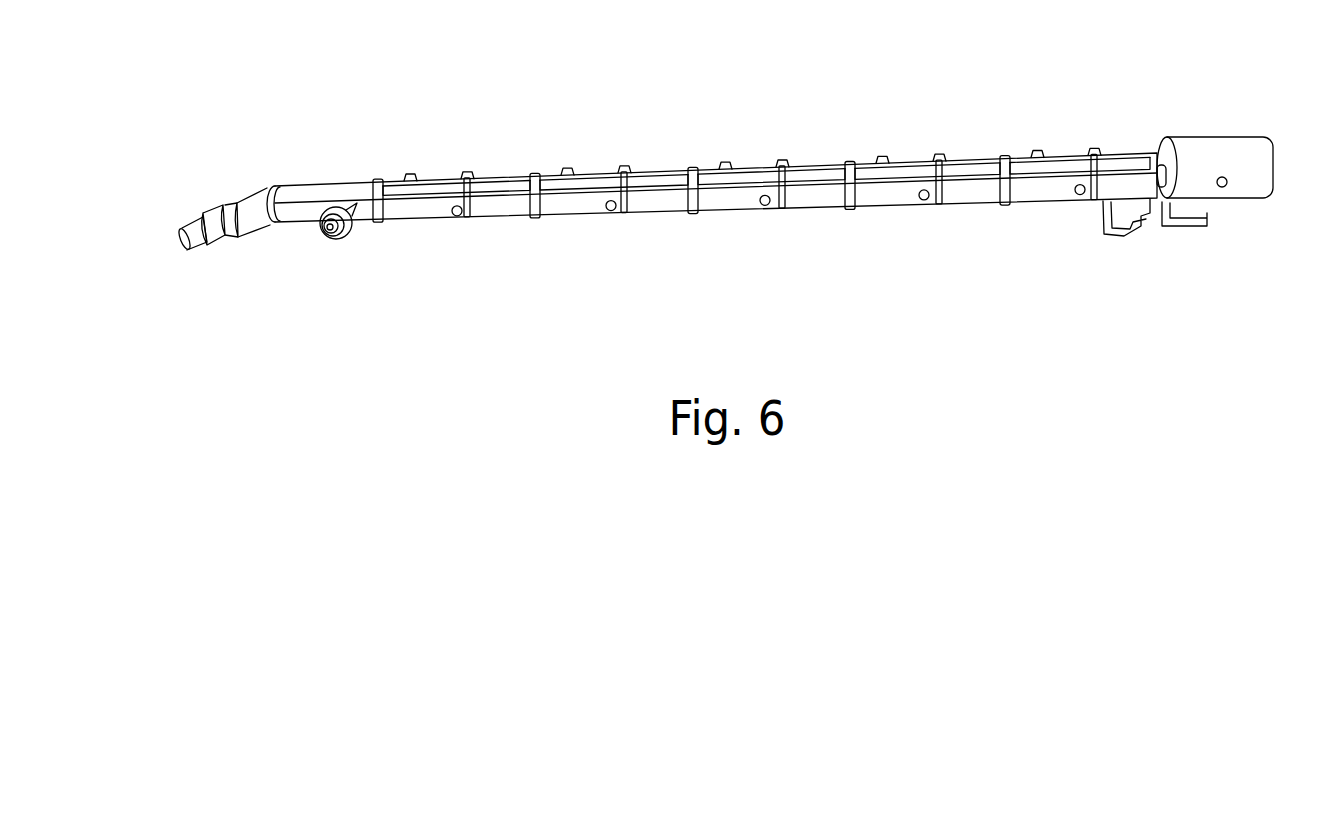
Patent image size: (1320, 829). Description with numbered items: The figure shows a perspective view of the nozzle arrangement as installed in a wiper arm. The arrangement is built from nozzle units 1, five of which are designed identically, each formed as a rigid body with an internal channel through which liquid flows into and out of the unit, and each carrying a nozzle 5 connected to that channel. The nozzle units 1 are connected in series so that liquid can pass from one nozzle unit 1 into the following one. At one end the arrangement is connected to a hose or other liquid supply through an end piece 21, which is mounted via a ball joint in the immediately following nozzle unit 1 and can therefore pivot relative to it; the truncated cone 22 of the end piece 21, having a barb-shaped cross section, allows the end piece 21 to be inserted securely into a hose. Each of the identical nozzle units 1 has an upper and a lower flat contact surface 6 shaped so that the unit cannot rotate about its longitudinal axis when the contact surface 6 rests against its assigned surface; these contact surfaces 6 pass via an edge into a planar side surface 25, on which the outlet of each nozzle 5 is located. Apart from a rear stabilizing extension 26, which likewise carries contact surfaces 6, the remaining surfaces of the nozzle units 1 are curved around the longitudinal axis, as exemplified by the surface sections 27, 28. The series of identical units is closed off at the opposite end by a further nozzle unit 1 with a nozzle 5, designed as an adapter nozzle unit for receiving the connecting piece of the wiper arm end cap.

The nozzle unit 1 is at (520, 178).
The nozzle 5 is at (333, 233).
The contact surface 6 is at (483, 183).
The end piece 21 is at (205, 250).
The truncated cone 22 is at (204, 221).
The side surface 25 is at (398, 213).
The rear stabilizing extension 26 is at (408, 175).
The surface section 27 is at (495, 178).
The surface section 28 is at (438, 181).